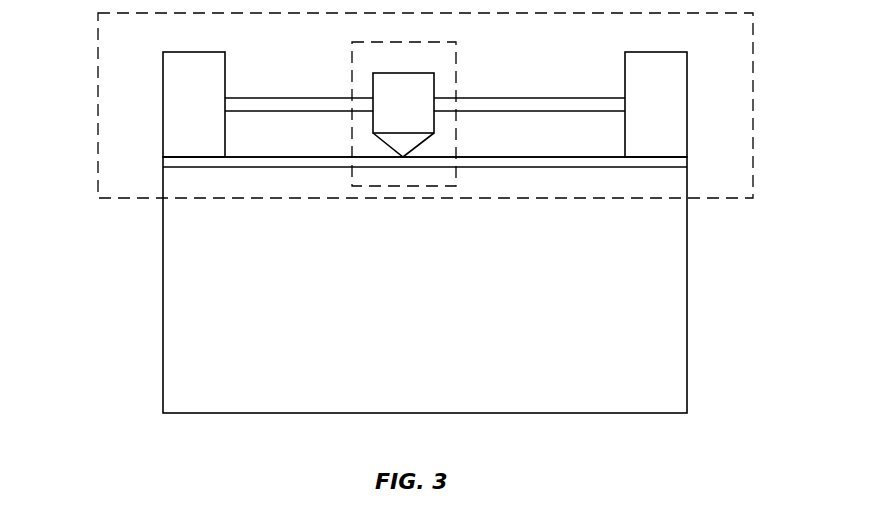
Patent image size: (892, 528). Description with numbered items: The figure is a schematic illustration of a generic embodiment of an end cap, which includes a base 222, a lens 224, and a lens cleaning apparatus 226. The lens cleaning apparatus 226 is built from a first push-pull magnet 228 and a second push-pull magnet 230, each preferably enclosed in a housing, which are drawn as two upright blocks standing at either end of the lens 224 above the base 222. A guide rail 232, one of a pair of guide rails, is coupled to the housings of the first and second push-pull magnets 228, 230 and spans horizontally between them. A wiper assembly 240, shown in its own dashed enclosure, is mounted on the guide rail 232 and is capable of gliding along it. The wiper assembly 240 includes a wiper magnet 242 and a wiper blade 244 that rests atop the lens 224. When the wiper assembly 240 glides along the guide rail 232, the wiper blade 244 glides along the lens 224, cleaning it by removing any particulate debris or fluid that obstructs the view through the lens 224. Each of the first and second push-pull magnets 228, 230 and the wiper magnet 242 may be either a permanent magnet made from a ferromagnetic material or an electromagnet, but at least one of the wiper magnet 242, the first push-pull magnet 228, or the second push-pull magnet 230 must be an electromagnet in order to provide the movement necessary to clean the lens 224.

The base 222 is at (688, 305).
The lens 224 is at (163, 163).
The lens cleaning apparatus 226 is at (90, 103).
The first push-pull magnet 228 is at (225, 70).
The second push-pull magnet 230 is at (624, 70).
The guide rail 232 is at (265, 112).
The wiper assembly 240 is at (463, 55).
The wiper magnet 242 is at (422, 116).
The wiper blade 244 is at (425, 140).